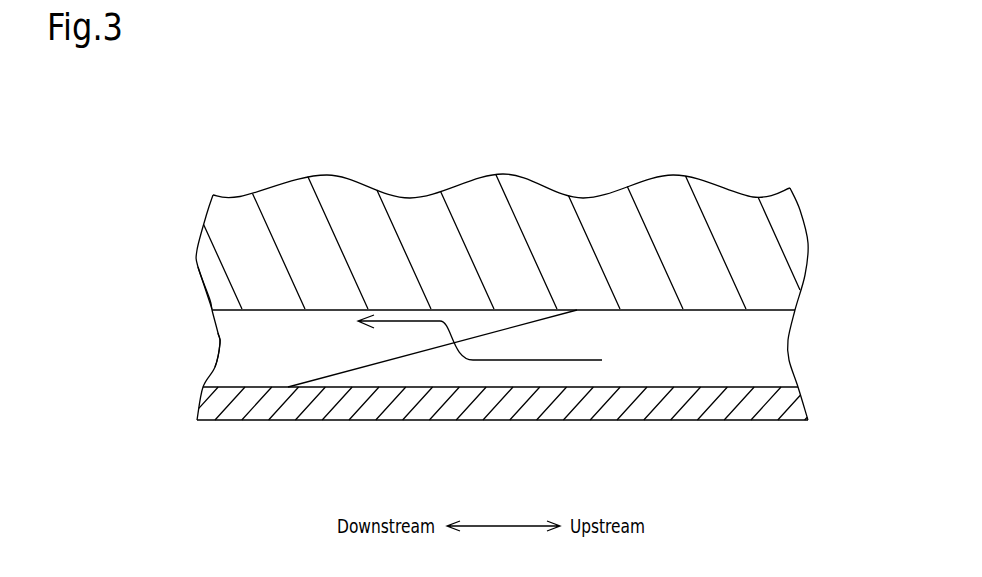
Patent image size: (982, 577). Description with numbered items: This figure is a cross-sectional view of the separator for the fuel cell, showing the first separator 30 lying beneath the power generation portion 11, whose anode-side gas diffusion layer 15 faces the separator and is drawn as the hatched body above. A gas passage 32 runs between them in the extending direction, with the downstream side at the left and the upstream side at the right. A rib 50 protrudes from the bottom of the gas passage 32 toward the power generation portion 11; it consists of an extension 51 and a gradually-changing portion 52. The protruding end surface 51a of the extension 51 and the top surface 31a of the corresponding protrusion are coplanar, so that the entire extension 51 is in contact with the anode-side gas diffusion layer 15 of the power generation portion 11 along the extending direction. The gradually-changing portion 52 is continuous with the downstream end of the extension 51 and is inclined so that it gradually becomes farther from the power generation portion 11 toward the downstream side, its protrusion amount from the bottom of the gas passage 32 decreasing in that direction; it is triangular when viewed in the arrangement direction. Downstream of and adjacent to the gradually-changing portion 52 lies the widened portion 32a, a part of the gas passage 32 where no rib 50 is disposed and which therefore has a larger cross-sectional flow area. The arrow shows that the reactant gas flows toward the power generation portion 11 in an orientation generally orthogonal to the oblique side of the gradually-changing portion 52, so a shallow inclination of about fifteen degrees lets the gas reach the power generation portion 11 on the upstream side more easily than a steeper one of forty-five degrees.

The power generation portion 11 is at (792, 272).
The anode-side gas diffusion layer 15 is at (552, 242).
The first separator 30 is at (814, 348).
The top surface of protrusion 31a is at (267, 309).
The gas passage 32 is at (235, 388).
The widened portion 32a is at (246, 360).
The rib 50 is at (567, 377).
The extension 51 is at (690, 368).
The protruding end surface 51a is at (640, 310).
The gradually-changing portion 52 is at (465, 367).